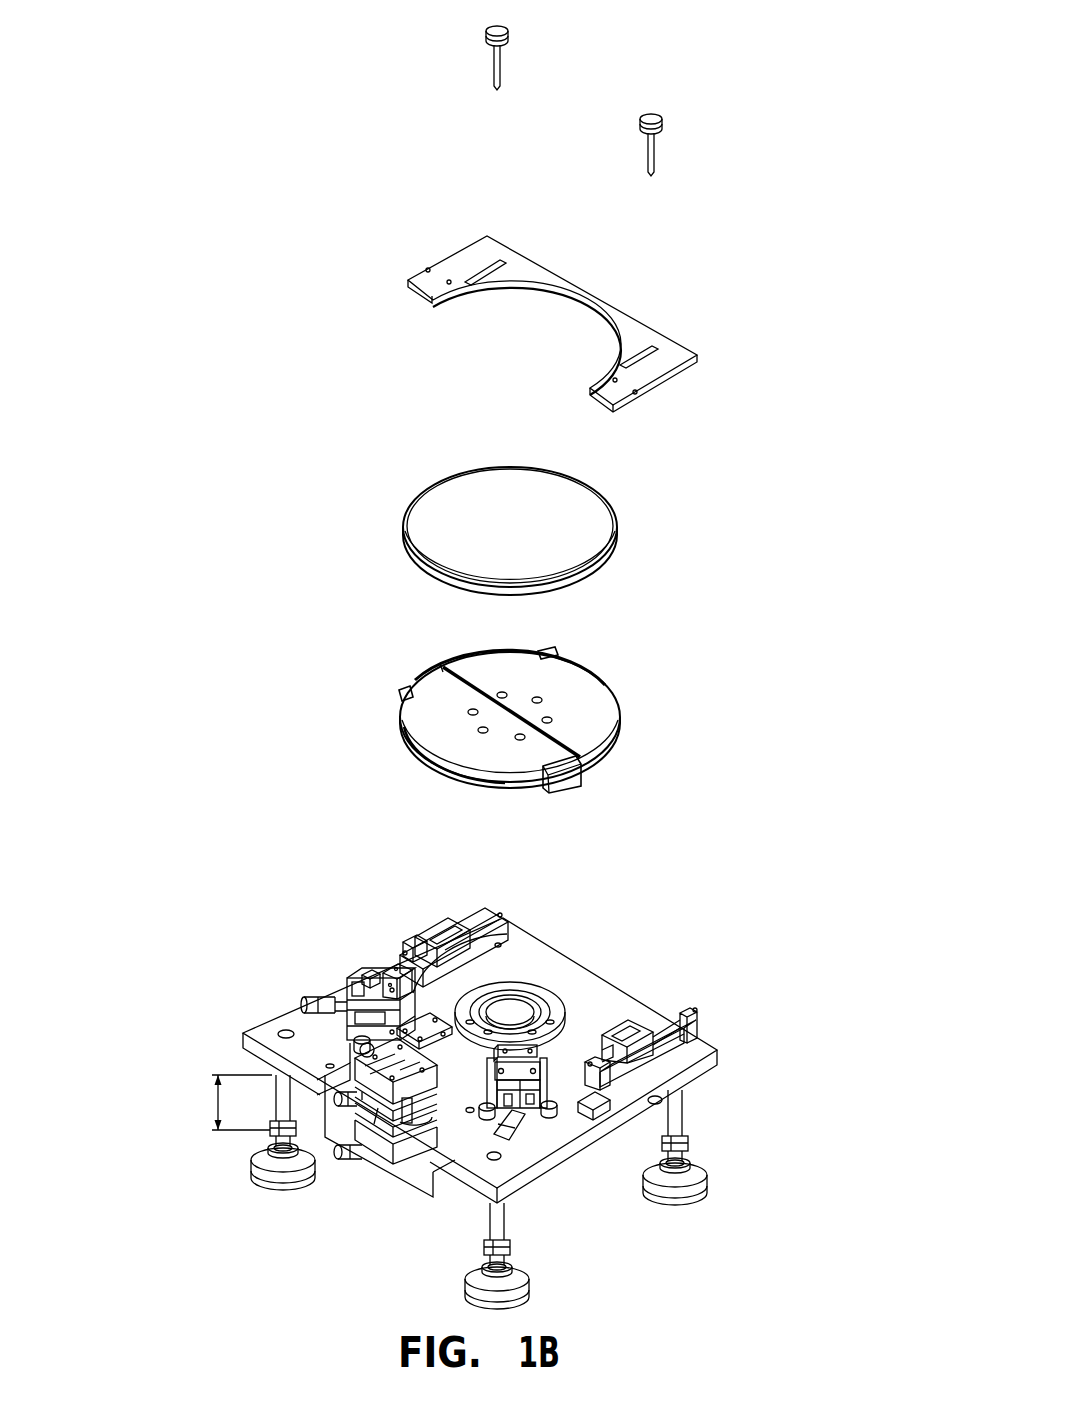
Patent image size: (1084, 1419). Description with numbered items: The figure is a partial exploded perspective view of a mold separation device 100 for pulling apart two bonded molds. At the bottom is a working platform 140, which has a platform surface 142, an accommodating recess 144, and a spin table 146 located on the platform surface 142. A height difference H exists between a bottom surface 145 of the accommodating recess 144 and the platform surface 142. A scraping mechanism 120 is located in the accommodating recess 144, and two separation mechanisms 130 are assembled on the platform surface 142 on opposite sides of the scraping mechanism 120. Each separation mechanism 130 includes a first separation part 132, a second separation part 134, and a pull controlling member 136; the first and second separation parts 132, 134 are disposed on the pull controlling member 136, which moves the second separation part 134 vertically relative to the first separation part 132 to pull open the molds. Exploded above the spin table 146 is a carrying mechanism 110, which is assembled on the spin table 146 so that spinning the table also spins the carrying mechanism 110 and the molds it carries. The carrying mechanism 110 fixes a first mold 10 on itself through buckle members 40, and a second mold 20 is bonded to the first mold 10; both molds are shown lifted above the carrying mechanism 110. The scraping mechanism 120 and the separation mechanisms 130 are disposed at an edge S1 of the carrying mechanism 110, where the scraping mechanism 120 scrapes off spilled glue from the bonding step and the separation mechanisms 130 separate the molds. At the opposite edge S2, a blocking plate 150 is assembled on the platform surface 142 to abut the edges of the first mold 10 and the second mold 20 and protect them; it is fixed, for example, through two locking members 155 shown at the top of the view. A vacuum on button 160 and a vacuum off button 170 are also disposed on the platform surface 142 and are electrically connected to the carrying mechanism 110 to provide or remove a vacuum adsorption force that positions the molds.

The locking member 155 is at (500, 27).
The blocking plate 150 is at (630, 332).
The second mold 20 is at (553, 495).
The first mold 10 is at (456, 588).
The carrying mechanism 110 is at (578, 717).
The edge S2 is at (592, 668).
The edge S1 is at (438, 775).
The buckle member 40 is at (548, 652).
The mold separation device 100 is at (504, 1074).
The working platform 140 is at (697, 1053).
The accommodating recess 144 is at (346, 1085).
The height difference H is at (230, 1102).
The spin table 146 is at (553, 1018).
The separation mechanism 130 is at (372, 963).
The second separation part 134 is at (398, 968).
The vacuum off button 170 is at (372, 980).
The pull controlling member 136 is at (310, 1000).
The first separation part 132 is at (490, 945).
The platform surface 142 is at (612, 1003).
The vacuum on button 160 is at (603, 1100).
The scraping mechanism 120 is at (400, 1172).
The bottom surface 145 is at (355, 1135).